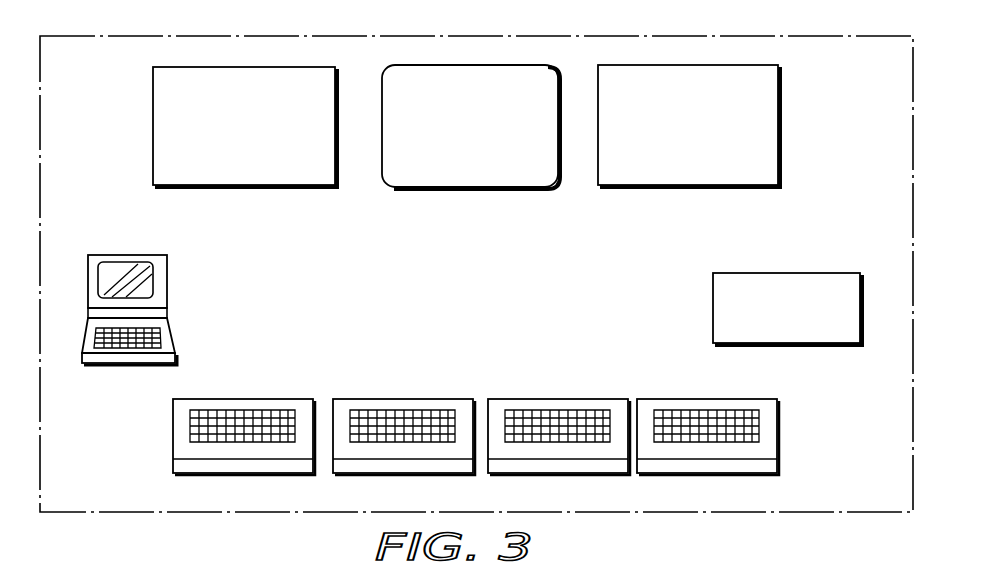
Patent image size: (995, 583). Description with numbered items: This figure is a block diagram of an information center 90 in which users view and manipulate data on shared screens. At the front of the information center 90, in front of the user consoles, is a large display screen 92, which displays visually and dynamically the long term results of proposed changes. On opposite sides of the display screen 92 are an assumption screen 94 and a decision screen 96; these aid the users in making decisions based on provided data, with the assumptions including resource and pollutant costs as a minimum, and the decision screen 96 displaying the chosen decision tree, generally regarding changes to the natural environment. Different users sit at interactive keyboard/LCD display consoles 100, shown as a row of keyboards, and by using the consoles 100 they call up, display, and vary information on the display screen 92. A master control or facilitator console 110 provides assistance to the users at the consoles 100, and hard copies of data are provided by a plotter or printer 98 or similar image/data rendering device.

The information center 90 is at (868, 36).
The display screen 92 is at (520, 47).
The assumption screen 94 is at (275, 67).
The decision screen 96 is at (739, 47).
The printer 98 is at (818, 273).
The consoles 100 is at (360, 380).
The facilitator console 110 is at (167, 280).